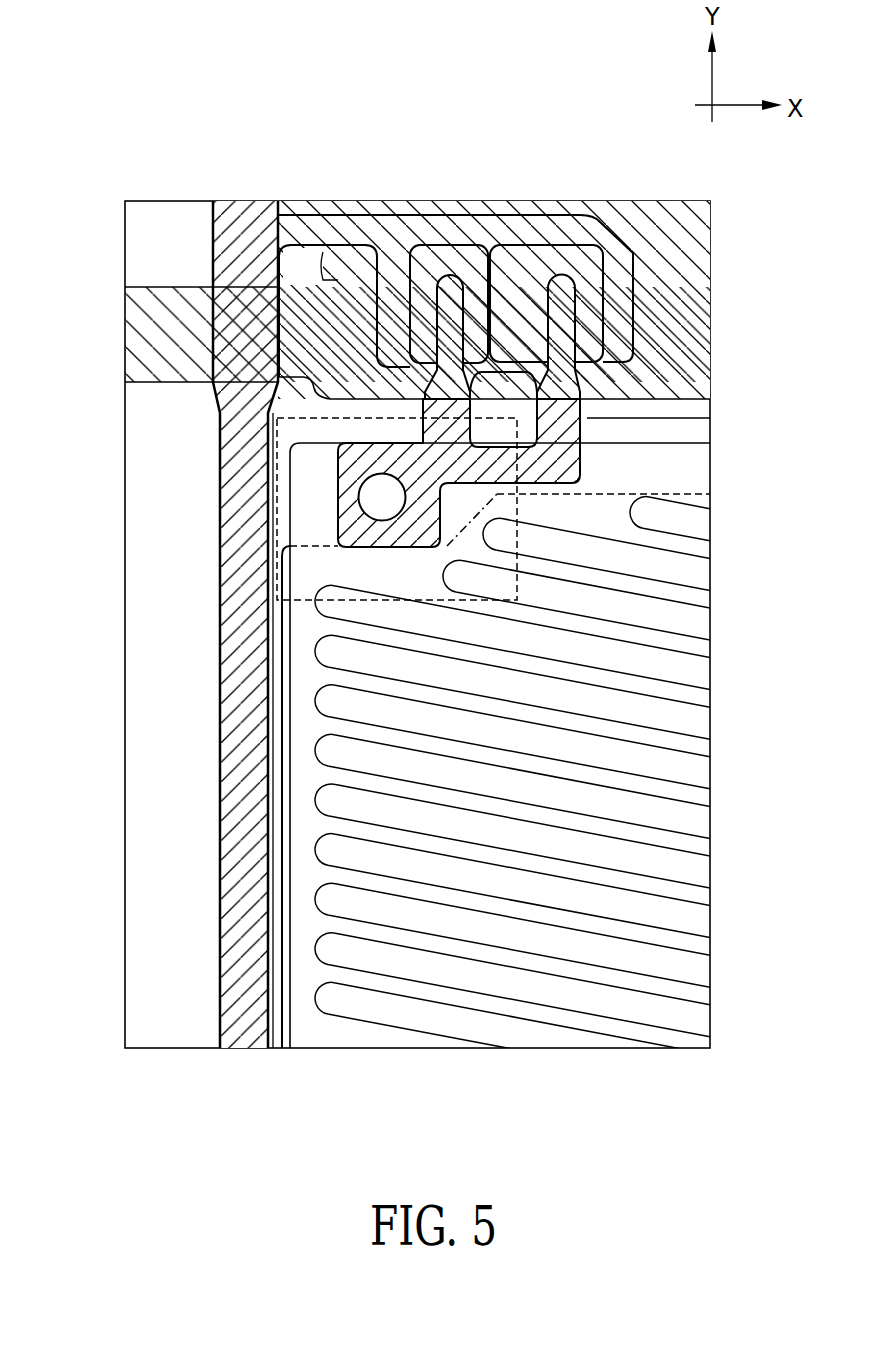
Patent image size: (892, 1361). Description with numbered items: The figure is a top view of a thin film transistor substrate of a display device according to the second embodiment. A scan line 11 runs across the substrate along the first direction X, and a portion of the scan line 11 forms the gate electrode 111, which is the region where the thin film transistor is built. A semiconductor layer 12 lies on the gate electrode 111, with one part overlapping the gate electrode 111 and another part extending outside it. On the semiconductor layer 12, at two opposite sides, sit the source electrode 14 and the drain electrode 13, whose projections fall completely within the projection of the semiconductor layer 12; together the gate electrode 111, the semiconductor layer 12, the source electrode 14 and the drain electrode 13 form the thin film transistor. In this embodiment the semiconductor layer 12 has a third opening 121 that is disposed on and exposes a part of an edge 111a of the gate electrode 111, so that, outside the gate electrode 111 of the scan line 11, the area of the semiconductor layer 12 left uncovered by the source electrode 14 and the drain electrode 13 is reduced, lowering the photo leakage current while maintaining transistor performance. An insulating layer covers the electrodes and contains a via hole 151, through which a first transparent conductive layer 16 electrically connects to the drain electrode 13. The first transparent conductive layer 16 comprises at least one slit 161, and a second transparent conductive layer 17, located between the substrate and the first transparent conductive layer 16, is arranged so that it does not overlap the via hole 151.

The scan line 11 is at (153, 335).
The gate electrode 111 is at (560, 268).
The edge of the gate electrode 111a is at (597, 375).
The semiconductor layer 12 is at (263, 420).
The third opening 121 is at (587, 418).
The drain electrode 13 is at (337, 476).
The source electrode 14 is at (393, 277).
The via hole 151 is at (372, 500).
The first transparent conductive layer 16 is at (697, 455).
The slit 161 is at (697, 577).
The second transparent conductive layer 17 is at (705, 494).